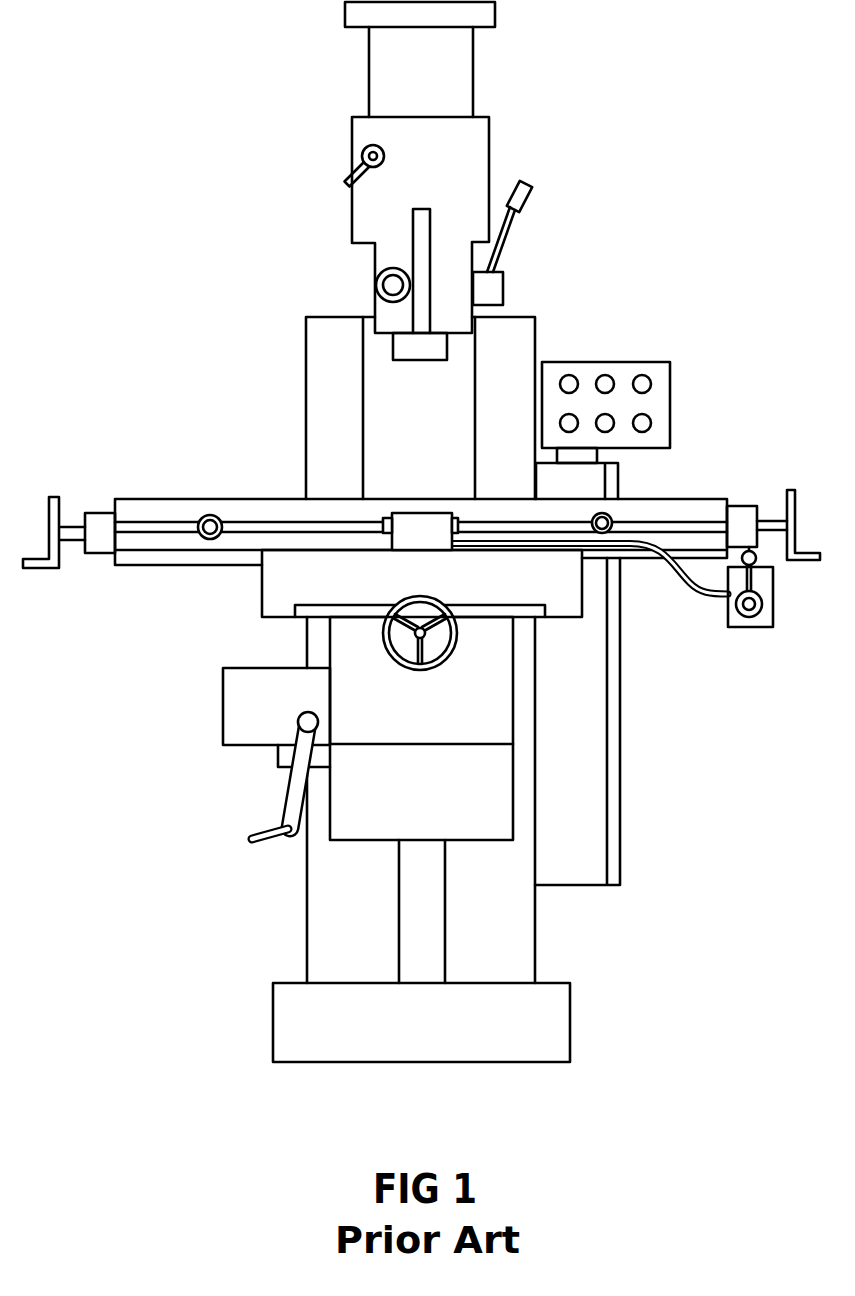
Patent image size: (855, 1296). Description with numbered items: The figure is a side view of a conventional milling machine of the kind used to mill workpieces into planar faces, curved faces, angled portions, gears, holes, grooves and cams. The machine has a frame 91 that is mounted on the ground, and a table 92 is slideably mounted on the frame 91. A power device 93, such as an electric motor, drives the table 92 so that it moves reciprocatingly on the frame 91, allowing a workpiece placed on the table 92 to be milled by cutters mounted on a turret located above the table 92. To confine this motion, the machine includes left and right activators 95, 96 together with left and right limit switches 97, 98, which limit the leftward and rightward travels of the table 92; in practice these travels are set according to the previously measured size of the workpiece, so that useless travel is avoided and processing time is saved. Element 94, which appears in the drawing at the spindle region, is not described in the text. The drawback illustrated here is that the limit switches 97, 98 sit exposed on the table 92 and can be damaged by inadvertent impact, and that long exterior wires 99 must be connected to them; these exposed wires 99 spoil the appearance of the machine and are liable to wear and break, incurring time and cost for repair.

The frame 91 is at (328, 908).
The table 92 is at (717, 495).
The power device 93 is at (768, 612).
The spindle 94 is at (403, 352).
The left activator 95 is at (209, 515).
The right activator 96 is at (610, 517).
The left limit switch 97 is at (387, 522).
The right limit switch 98 is at (457, 512).
The exterior wires 99 is at (707, 598).